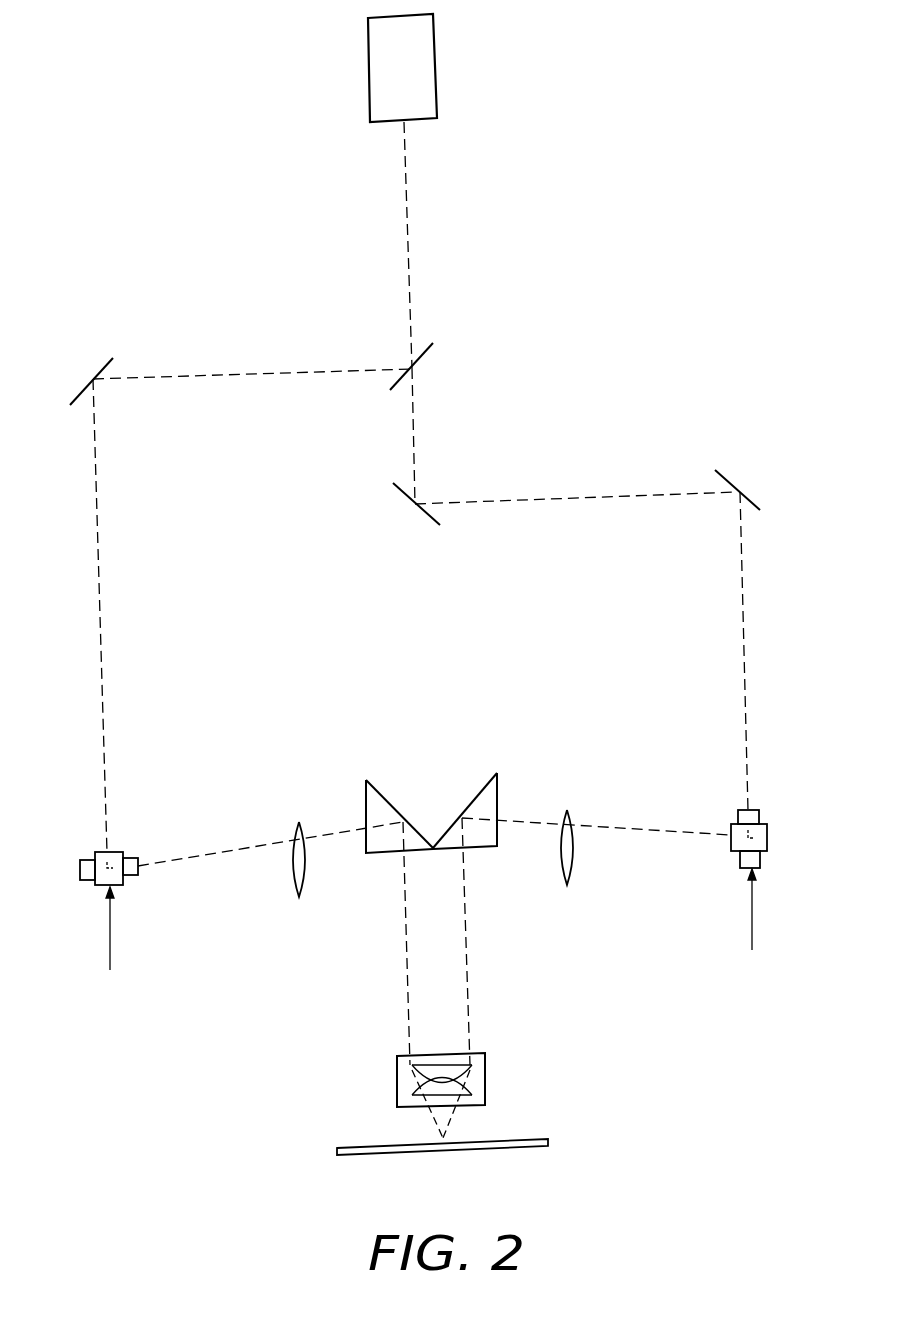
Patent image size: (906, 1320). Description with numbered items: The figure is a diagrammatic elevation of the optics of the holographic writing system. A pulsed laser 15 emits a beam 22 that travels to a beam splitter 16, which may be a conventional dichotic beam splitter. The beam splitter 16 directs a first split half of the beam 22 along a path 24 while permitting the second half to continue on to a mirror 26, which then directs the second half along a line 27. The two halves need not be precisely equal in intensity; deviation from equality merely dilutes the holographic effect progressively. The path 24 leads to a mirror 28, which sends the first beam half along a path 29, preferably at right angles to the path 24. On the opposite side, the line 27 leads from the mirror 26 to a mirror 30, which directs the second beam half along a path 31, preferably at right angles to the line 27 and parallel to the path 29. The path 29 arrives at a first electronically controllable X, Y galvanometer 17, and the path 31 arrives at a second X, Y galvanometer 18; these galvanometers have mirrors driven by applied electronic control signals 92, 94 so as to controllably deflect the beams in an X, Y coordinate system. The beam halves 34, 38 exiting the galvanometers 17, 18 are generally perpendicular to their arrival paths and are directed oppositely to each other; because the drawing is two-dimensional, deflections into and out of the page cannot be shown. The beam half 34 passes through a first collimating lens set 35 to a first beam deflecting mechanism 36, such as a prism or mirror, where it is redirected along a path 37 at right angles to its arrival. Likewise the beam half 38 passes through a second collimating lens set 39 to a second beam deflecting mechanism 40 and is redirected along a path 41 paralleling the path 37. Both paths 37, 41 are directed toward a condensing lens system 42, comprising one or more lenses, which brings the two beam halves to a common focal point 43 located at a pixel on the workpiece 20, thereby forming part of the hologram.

The pulsed laser 15 is at (437, 76).
The beam 22 is at (406, 211).
The beam splitter 16 is at (425, 351).
The path 24 is at (242, 373).
The mirror 28 is at (97, 372).
The path 29 is at (97, 506).
The mirror 26 is at (430, 518).
The line 27 is at (592, 495).
The mirror 30 is at (752, 502).
The path 31 is at (745, 671).
The X, Y galvanometer 17 is at (103, 851).
The electronic control signal 92 is at (110, 937).
The beam half 34 is at (236, 836).
The first collimating lens set 35 is at (305, 872).
The first beam deflecting mechanism 36 is at (379, 790).
The second beam deflecting mechanism 40 is at (482, 790).
The path 37 is at (405, 945).
The path 41 is at (470, 1004).
The beam half 38 is at (672, 824).
The second collimating lens set 39 is at (575, 848).
The X, Y galvanometer 18 is at (767, 838).
The electronic control signal 94 is at (753, 920).
The condensing lens system 42 is at (485, 1075).
The common focal point 43 is at (445, 1138).
The workpiece 20 is at (362, 1148).